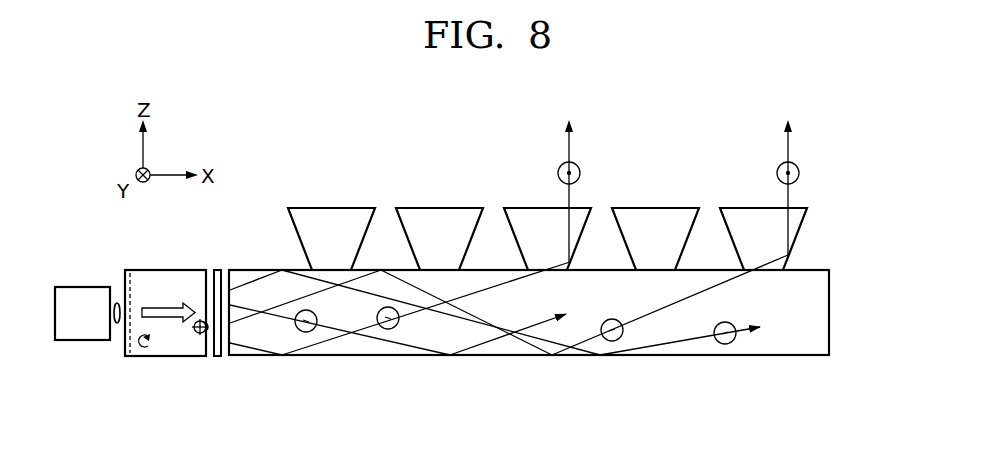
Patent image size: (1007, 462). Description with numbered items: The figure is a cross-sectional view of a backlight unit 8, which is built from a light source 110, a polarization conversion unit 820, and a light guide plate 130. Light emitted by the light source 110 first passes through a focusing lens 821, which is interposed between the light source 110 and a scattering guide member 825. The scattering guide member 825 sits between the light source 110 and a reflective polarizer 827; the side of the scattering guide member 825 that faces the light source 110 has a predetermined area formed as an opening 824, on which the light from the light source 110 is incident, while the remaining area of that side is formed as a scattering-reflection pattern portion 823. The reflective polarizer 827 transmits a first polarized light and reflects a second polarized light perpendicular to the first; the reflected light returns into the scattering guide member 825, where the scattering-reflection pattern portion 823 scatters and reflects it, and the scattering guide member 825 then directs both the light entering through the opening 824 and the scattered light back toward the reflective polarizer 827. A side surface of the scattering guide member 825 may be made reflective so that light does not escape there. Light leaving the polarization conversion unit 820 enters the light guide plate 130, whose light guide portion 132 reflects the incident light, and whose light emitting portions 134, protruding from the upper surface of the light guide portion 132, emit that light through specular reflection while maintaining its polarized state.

The backlight unit 8 is at (864, 151).
The light source 110 is at (82, 341).
The focusing lens 821 is at (117, 321).
The polarization conversion unit 820 is at (173, 324).
The scattering-reflection pattern portion 823 is at (142, 271).
The opening 824 is at (130, 318).
The scattering guide member 825 is at (182, 269).
The reflective polarizer 827 is at (221, 269).
The light guide plate 130 is at (581, 237).
The light guide portion 132 is at (829, 322).
The light emitting portions 134 is at (585, 195).